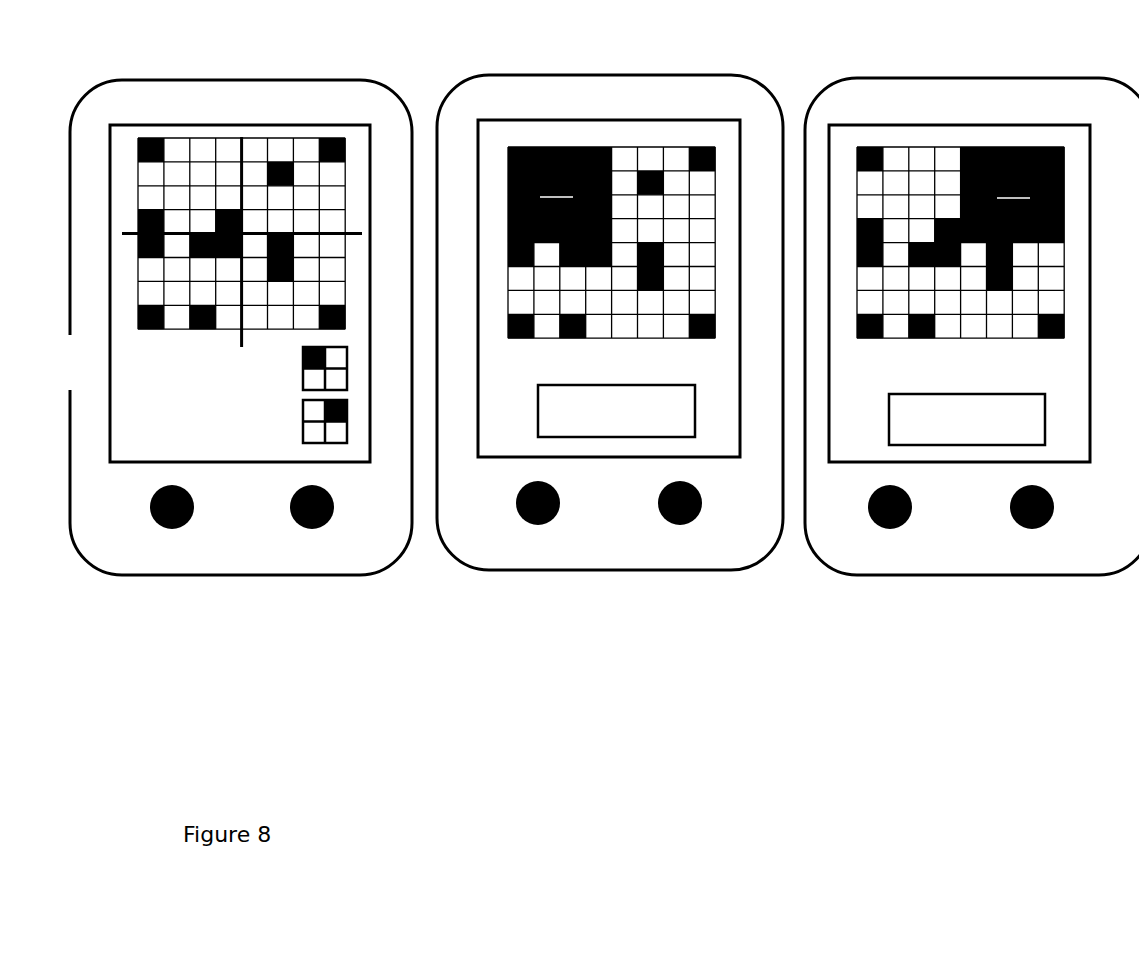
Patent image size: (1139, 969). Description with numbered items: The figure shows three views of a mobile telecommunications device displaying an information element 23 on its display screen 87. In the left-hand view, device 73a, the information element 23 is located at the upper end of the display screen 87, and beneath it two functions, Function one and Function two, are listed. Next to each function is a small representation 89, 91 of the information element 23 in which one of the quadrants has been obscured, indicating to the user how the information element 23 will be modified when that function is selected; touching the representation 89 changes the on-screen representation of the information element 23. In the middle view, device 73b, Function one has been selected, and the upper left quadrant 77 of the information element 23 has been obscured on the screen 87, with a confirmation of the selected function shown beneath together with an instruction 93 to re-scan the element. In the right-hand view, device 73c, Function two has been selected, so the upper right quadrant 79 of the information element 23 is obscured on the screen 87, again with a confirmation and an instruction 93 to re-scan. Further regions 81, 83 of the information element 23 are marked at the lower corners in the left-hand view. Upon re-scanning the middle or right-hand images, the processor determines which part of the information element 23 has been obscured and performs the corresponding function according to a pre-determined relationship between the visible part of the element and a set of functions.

The information element 23 is at (217, 120).
The mobile telecommunications device (left-hand view) 73a is at (268, 529).
The mobile telecommunications device (middle view) 73b is at (636, 527).
The mobile telecommunications device (right-hand view) 73c is at (982, 527).
The upper left quadrant 77 is at (135, 138).
The upper right quadrant 79 is at (349, 137).
The third region 81 is at (137, 333).
The fourth region 83 is at (348, 320).
The display screen 87 is at (165, 124).
The representation of the information element for Function 1 89 is at (350, 396).
The representation of the information element for Function 2 91 is at (317, 549).
The instruction to re-scan 93 is at (888, 426).